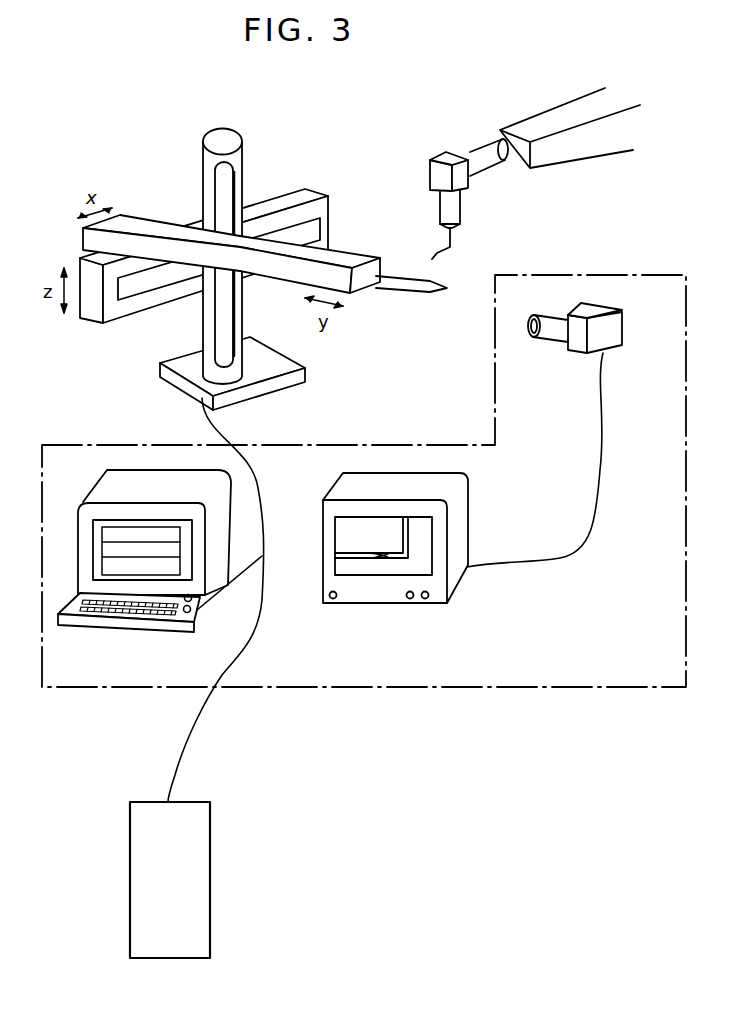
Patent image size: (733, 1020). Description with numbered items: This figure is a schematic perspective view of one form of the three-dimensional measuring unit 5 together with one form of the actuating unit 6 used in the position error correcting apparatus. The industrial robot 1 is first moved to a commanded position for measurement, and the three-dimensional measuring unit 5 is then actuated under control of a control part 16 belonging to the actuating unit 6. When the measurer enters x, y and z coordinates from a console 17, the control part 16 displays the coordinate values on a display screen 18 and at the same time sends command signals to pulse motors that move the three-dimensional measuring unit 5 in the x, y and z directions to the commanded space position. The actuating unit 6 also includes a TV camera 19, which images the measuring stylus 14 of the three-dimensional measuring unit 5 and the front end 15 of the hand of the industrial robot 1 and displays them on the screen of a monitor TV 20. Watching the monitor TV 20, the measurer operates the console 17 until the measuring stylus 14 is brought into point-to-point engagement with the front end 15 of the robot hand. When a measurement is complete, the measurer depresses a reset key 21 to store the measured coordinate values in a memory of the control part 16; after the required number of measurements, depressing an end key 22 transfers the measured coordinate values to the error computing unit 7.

The industrial robot 1 is at (633, 137).
The three-dimensional measuring unit 5 is at (201, 174).
The actuating unit 6 is at (670, 688).
The error computing unit 7 is at (193, 802).
The measuring stylus 14 is at (411, 275).
The front end of the hand 15 is at (452, 246).
The control part 16 is at (94, 495).
The console 17 is at (94, 627).
The display screen 18 is at (89, 557).
The TV camera 19 is at (623, 328).
The monitor TV 20 is at (466, 500).
The reset key 21 is at (187, 614).
The end key 22 is at (192, 612).